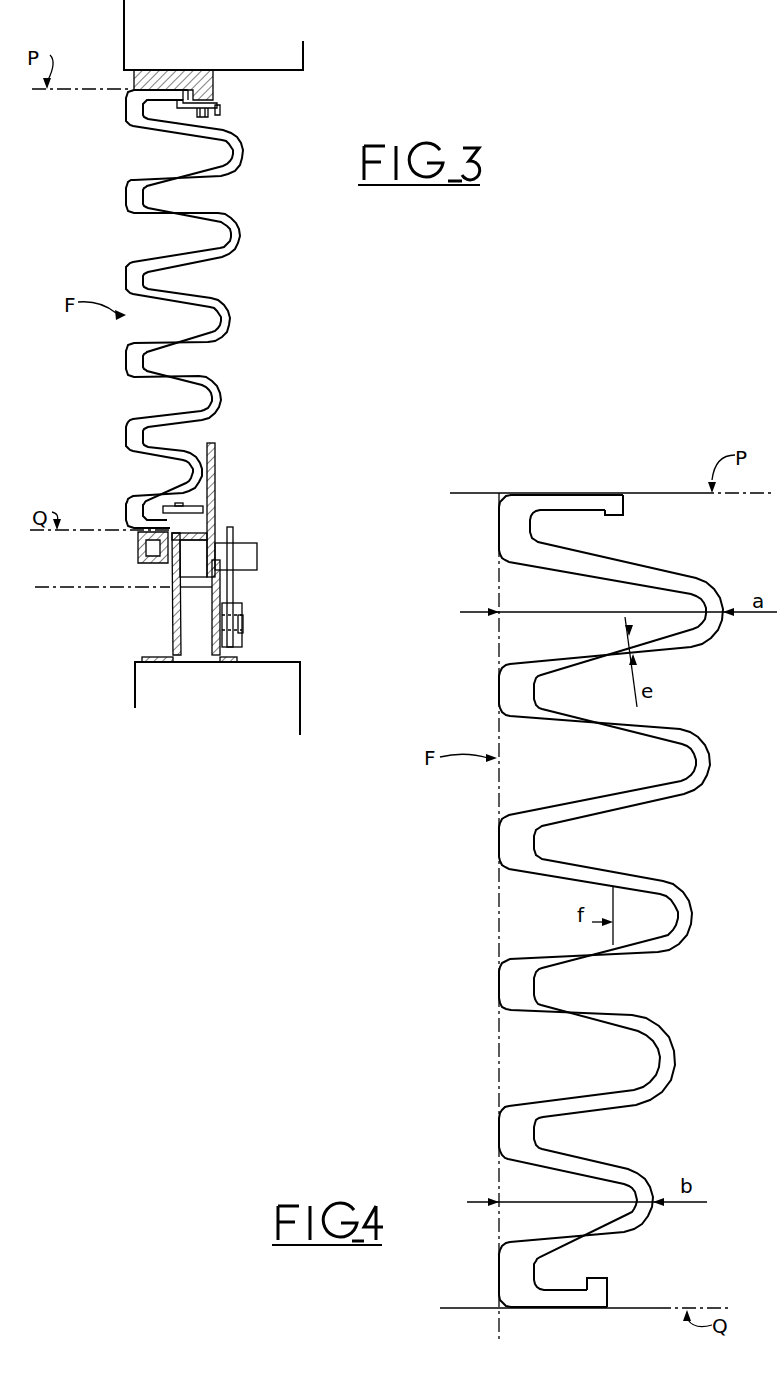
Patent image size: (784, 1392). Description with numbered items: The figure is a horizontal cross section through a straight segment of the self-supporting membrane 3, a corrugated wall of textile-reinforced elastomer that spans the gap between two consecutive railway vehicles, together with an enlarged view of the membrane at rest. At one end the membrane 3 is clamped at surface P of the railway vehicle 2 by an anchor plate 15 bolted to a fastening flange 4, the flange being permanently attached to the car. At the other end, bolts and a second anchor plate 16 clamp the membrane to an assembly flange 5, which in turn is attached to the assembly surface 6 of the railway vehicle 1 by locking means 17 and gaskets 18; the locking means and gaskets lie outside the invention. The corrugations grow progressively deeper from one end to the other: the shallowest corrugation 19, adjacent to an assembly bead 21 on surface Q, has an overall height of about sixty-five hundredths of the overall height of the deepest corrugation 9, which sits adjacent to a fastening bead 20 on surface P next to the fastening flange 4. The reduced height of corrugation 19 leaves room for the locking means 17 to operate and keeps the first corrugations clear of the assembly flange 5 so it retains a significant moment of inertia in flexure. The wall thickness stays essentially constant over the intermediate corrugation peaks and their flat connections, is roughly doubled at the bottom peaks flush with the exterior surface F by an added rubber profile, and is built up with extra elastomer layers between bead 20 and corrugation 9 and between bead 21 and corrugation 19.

In FIG. 3, the railway vehicle 1 is at (207, 682).
In FIG. 3, the railway vehicle 2 is at (138, 42).
In FIG. 3, the self-supporting membrane 3 is at (138, 283).
In FIG. 4, the self-supporting membrane 3 is at (611, 901).
In FIG. 3, the fastening flange 4 is at (213, 82).
In FIG. 3, the assembly flange 5 is at (215, 487).
In FIG. 3, the assembly surface 6 is at (63, 587).
In FIG. 3, the deepest corrugation 9 is at (233, 153).
In FIG. 4, the deepest corrugation 9 is at (704, 609).
In FIG. 3, the anchor plate 15 is at (220, 108).
In FIG. 3, the anchor plate 16 is at (153, 508).
In FIG. 3, the locking means 17 is at (250, 578).
In FIG. 3, the gasket 18 is at (188, 575).
In FIG. 3, the shallowest corrugation 19 is at (190, 472).
In FIG. 4, the shallowest corrugation 19 is at (636, 1197).
In FIG. 4, the fastening bead 20 is at (619, 517).
In FIG. 4, the assembly bead 21 is at (597, 1278).